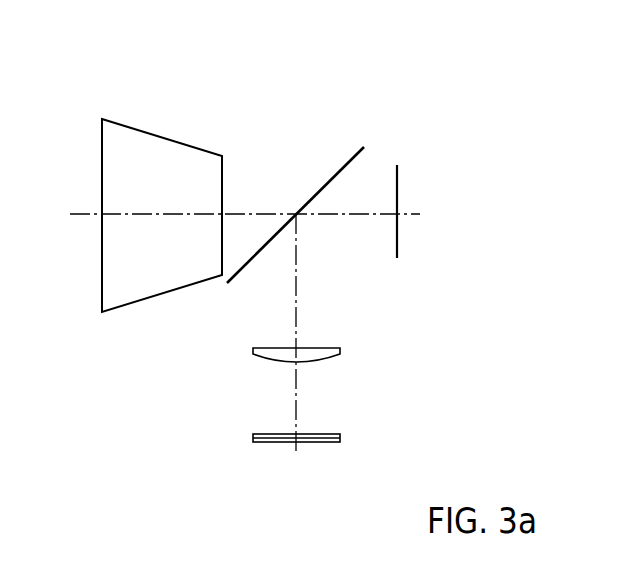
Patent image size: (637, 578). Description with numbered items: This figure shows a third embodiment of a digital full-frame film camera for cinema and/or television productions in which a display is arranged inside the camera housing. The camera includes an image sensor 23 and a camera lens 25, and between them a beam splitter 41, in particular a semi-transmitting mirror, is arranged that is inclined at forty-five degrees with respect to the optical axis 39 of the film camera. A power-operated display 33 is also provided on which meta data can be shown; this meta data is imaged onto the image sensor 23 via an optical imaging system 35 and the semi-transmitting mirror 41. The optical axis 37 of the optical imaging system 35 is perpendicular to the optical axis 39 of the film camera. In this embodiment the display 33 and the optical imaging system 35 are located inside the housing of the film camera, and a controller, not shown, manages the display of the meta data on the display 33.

The image sensor 23 is at (399, 190).
The camera lens 25 is at (143, 131).
The power-operated display 33 is at (253, 438).
The optical imaging system 35 is at (253, 353).
The optical axis of the optical imaging system 37 is at (297, 291).
The optical axis of the film camera 39 is at (243, 213).
The beam splitter 41 is at (337, 167).